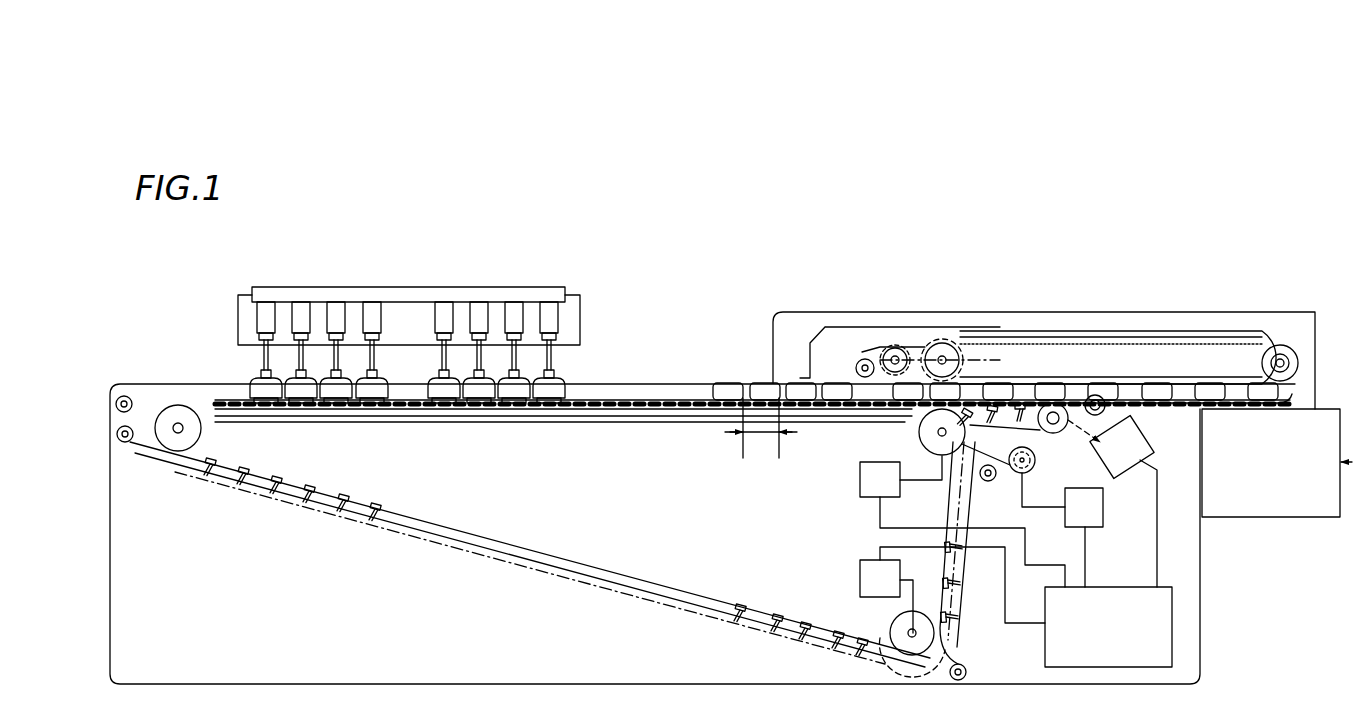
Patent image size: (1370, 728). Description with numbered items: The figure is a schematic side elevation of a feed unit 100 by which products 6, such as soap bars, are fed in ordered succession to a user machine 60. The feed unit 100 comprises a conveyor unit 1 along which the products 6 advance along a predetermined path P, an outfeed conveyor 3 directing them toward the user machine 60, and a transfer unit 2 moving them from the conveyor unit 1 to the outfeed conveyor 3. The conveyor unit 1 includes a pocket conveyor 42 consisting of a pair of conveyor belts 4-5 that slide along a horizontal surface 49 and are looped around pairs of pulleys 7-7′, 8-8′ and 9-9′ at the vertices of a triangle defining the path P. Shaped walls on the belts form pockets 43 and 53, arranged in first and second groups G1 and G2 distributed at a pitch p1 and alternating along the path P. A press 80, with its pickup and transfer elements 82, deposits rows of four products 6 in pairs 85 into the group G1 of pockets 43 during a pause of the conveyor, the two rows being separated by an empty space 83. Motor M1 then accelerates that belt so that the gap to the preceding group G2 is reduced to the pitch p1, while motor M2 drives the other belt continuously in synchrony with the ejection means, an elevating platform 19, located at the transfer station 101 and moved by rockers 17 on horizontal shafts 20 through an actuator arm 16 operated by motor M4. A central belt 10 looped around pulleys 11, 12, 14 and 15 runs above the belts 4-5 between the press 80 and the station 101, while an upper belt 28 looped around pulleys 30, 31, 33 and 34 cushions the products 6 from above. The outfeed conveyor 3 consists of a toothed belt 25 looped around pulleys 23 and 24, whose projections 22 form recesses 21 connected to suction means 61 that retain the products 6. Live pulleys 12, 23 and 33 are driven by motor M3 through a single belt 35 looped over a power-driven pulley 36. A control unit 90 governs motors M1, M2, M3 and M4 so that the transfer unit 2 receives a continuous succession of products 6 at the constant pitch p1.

The conveyor unit 1 is at (598, 383).
The transfer unit 2 is at (1068, 469).
The outfeed conveyor 3 is at (1068, 333).
The pair of conveyor belts 4-5 is at (661, 592).
The products 6 is at (725, 401).
The pair of pulleys 7-7′ is at (185, 452).
The pair of pulleys 8-8′ is at (934, 456).
The pair of pulleys 9-9′ is at (890, 638).
The belt 10 is at (168, 392).
The pulley 11 is at (124, 395).
The live pulley 12 is at (1078, 396).
The pulley 14 is at (953, 678).
The pulley 15 is at (125, 444).
The reciprocating actuator arm 16 is at (1138, 385).
The rockers 17 is at (977, 410).
The elevating platform 19 is at (969, 384).
The horizontal shafts 20 is at (999, 482).
The recesses 21 is at (1038, 333).
The projections 22 is at (1174, 333).
The live pulley 23 is at (947, 341).
The pulley 24 is at (1283, 350).
The toothed conveyor belt 25 is at (1242, 333).
The belt 28 is at (812, 345).
The pulley 30 is at (791, 378).
The pulley 31 is at (858, 352).
The live pulley 33 is at (880, 342).
The pulley 34 is at (893, 343).
The single belt 35 is at (962, 350).
The power driven pulley 36 is at (1017, 472).
The conveyor 42 is at (585, 417).
The pocket 43 is at (358, 522).
The horizontal surface 49 is at (648, 417).
The pocket 53 is at (322, 512).
The user machine 60 is at (1277, 463).
The suction means 61 is at (1203, 340).
The press 80 is at (338, 287).
The pickup and transfer elements 82 is at (244, 311).
The empty space 83 is at (404, 385).
The pairs of rows 85 is at (497, 405).
The control unit 90 is at (1108, 627).
The feed unit 100 is at (660, 298).
The transfer station 101 is at (957, 345).
The first group of pockets G1 is at (244, 378).
The second group of pockets G2 is at (858, 417).
The motor M1 is at (962, 521).
The motor M2 is at (952, 590).
The motor M3 is at (1062, 530).
The motor M4 is at (1112, 501).
The path P is at (698, 352).
The pitch p1 is at (769, 429).